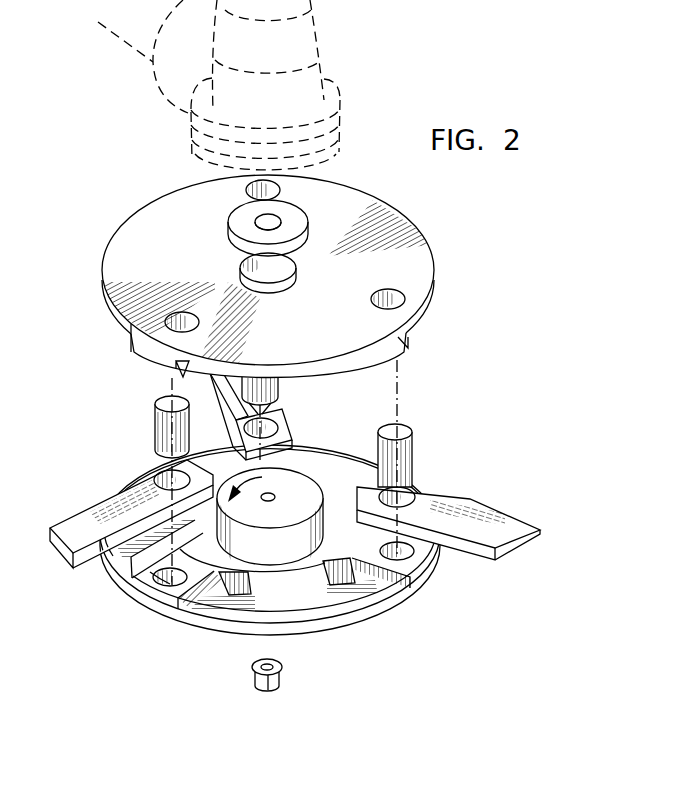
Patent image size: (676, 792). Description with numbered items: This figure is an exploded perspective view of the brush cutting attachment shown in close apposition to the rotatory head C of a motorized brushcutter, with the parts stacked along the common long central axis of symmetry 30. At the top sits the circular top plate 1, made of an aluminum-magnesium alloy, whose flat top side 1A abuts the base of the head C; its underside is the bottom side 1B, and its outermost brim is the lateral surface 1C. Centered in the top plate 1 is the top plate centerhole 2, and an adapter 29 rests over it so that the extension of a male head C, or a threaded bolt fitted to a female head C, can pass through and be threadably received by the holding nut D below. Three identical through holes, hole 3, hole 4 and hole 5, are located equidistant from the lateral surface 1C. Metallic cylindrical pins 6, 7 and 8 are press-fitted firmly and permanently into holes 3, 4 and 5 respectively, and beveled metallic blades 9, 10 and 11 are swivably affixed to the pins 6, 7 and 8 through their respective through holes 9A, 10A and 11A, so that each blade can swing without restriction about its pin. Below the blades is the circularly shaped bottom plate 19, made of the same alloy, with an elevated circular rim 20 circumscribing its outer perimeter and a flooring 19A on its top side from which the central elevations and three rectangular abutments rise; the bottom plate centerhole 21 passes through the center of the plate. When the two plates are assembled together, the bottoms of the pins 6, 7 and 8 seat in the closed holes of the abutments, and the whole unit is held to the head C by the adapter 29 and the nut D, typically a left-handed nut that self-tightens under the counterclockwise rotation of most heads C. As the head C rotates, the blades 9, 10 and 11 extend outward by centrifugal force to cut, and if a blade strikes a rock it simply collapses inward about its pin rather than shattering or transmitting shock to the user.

The top plate 1 is at (398, 232).
The flat top side 1A is at (153, 214).
The bottom side 1B is at (407, 358).
The lateral surface 1C is at (116, 312).
The top plate centerhole 2 is at (281, 280).
The through hole 3 is at (396, 300).
The through hole 4 is at (193, 324).
The through hole 5 is at (281, 188).
The adapter 29 is at (241, 215).
The rotatory head C is at (338, 100).
The long central axis of symmetry 30 is at (170, 386).
The cylindrical pin 7 is at (160, 407).
The cylindrical pin 8 is at (273, 394).
The cylindrical pin 6 is at (406, 432).
The beveled blade 11 is at (233, 400).
The through hole 11A is at (266, 426).
The beveled blade 10 is at (103, 503).
The through hole 10A is at (157, 483).
The beveled blade 9 is at (517, 533).
The through hole 9A is at (408, 497).
The bottom plate centerhole 21 is at (275, 495).
The bottom plate 19 is at (228, 636).
The flooring 19A is at (373, 603).
The elevated circular rim 20 is at (333, 618).
The holding nut D is at (283, 674).